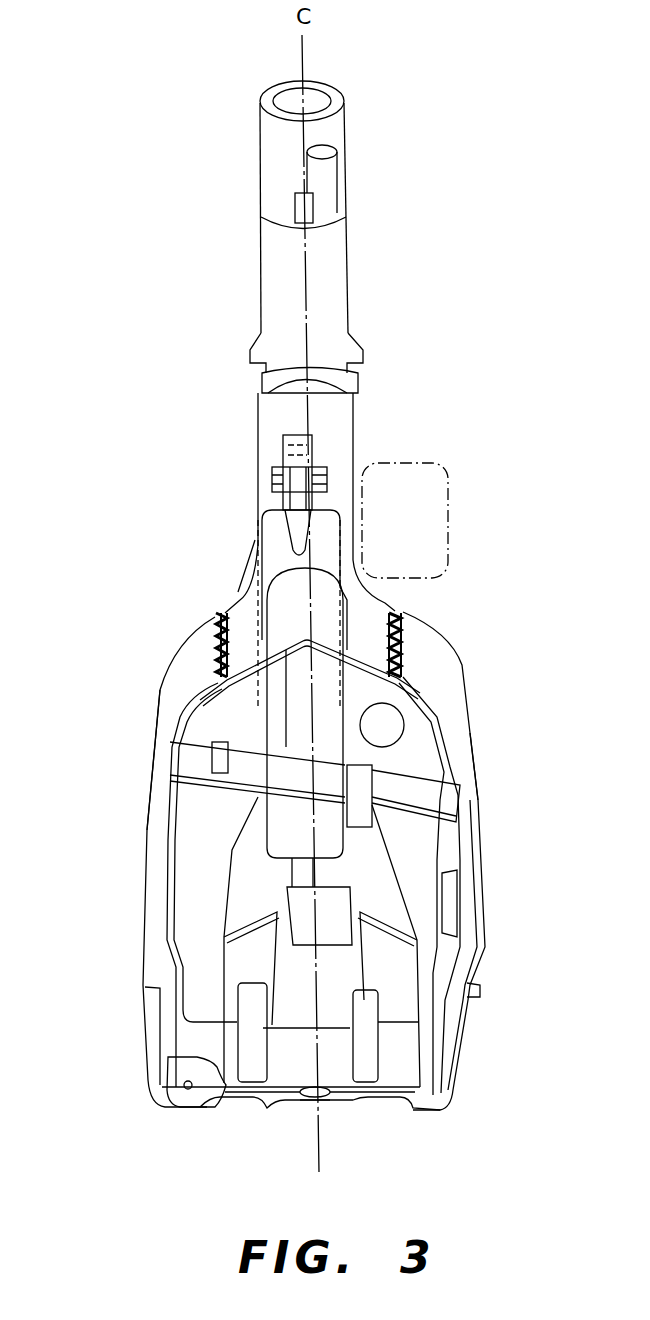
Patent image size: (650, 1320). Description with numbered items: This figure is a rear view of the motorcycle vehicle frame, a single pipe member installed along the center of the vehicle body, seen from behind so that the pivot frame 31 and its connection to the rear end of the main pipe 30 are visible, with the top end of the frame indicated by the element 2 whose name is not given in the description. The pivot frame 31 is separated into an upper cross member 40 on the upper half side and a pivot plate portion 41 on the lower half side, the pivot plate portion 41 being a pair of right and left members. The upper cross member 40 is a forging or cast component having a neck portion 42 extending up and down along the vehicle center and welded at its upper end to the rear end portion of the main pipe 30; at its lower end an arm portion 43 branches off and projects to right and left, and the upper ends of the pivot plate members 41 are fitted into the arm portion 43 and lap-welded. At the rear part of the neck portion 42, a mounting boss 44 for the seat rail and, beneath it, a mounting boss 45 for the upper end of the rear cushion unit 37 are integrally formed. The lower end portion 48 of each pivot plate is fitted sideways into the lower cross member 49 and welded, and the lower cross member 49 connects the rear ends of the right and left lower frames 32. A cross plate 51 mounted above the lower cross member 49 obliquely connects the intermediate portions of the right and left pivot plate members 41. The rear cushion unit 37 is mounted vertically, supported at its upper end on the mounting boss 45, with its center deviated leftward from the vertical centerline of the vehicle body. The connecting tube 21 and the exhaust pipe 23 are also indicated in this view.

The steering shaft 2 is at (345, 97).
The connecting tube 21 is at (440, 465).
The exhaust pipe 23 is at (397, 717).
The main pipe 30 is at (272, 262).
The pivot frame 31 is at (157, 650).
The lower frame 32 is at (360, 940).
The rear cushion unit 37 is at (247, 537).
The upper cross member 40 is at (245, 451).
The pivot plate portion 41 is at (160, 748).
The neck portion 42 is at (260, 403).
The arm portion 43 is at (240, 598).
The mounting boss 44 is at (313, 436).
The mounting boss 45 is at (272, 482).
The lower end portion 48 is at (162, 1050).
The lower cross member 49 is at (323, 1097).
The cross plate 51 is at (243, 767).